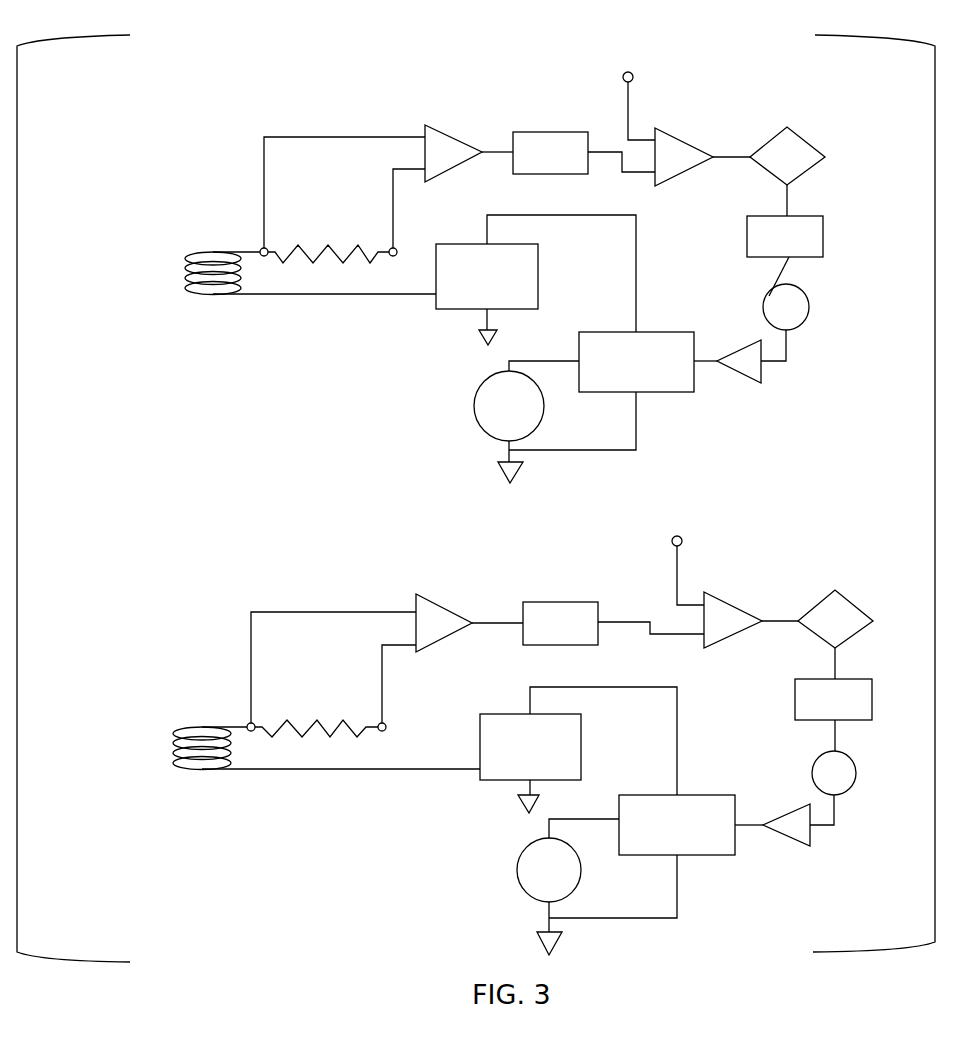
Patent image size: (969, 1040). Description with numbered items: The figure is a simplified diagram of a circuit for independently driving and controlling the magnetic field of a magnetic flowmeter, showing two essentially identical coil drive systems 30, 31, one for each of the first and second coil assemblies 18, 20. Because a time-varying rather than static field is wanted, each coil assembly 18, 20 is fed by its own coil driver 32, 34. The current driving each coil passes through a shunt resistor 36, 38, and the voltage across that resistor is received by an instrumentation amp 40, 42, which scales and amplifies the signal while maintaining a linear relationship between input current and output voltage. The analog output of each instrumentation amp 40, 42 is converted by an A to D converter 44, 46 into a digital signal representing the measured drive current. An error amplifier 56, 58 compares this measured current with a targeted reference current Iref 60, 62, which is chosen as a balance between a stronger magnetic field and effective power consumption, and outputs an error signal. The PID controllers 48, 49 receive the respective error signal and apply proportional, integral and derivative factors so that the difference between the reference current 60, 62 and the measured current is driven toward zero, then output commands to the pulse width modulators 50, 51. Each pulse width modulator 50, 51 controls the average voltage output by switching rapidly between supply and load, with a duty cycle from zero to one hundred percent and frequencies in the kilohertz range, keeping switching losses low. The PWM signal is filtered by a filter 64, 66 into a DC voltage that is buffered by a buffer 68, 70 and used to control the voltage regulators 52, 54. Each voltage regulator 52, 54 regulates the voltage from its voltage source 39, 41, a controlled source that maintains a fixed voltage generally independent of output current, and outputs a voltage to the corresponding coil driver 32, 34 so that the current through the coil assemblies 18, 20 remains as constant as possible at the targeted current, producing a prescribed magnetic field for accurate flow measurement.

The coil drive system 30 is at (131, 97).
The coil drive system 31 is at (143, 588).
The first coil assembly 18 is at (205, 250).
The second coil assembly 20 is at (188, 725).
The shunt resistor 36 is at (337, 242).
The shunt resistor 38 is at (317, 715).
The instrumentation amp 40 is at (450, 135).
The instrumentation amp 42 is at (445, 613).
The A to D converter 44 is at (565, 124).
The A to D converter 46 is at (585, 595).
The targeted reference current 60 is at (648, 72).
The targeted reference current 62 is at (698, 535).
The error amplifier 56 is at (683, 134).
The error amplifier 58 is at (733, 600).
The PID controller 48 is at (810, 138).
The PID controller 49 is at (857, 600).
The pulse width modulator 50 is at (807, 220).
The pulse width modulator 51 is at (862, 670).
The filter 64 is at (813, 298).
The filter 66 is at (862, 760).
The buffer 68 is at (751, 388).
The buffer 70 is at (808, 853).
The voltage regulator 52 is at (662, 323).
The voltage regulator 54 is at (703, 788).
The coil driver 32 is at (540, 278).
The coil driver 34 is at (582, 750).
The voltage source 39 is at (478, 390).
The voltage source 41 is at (520, 862).